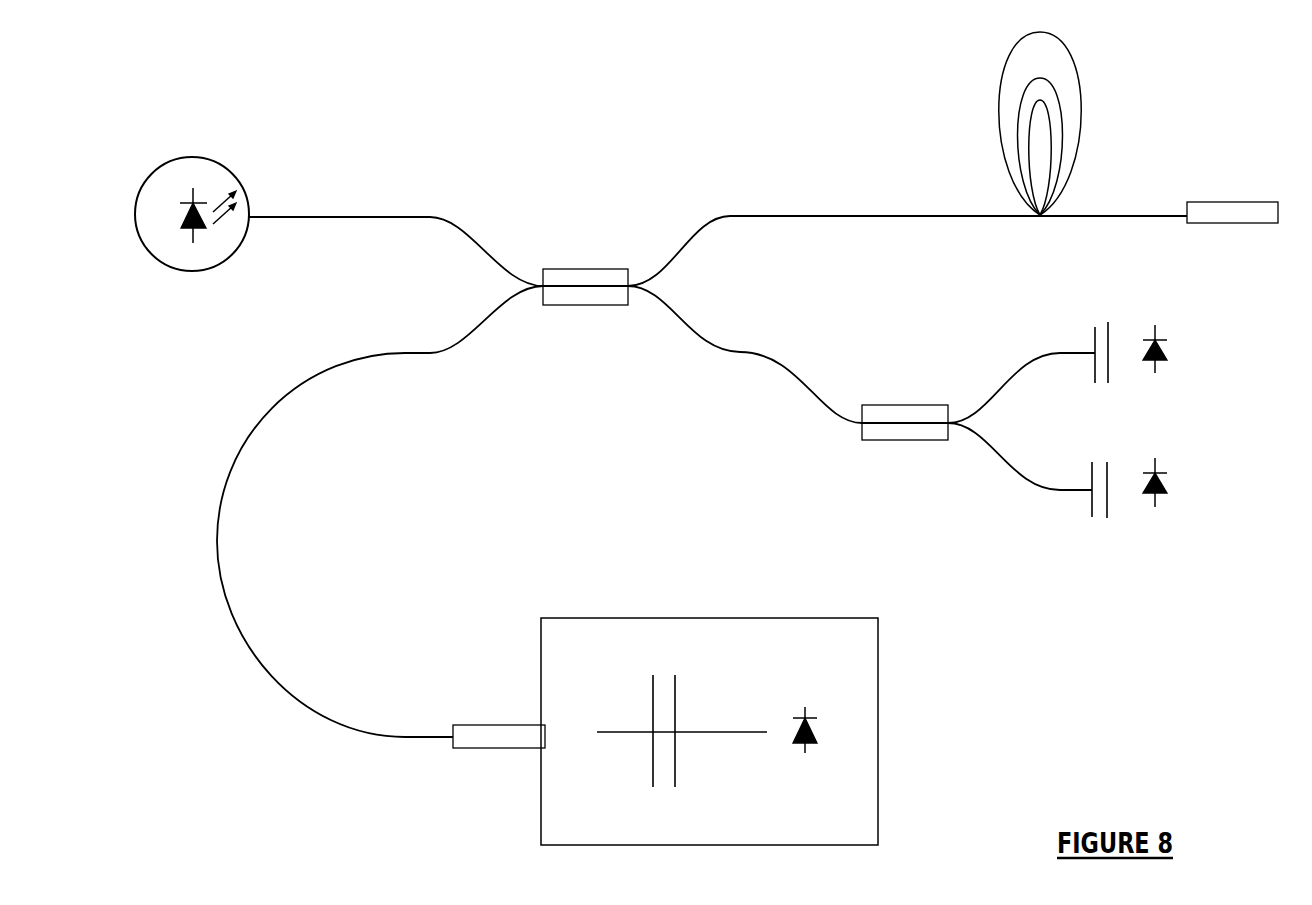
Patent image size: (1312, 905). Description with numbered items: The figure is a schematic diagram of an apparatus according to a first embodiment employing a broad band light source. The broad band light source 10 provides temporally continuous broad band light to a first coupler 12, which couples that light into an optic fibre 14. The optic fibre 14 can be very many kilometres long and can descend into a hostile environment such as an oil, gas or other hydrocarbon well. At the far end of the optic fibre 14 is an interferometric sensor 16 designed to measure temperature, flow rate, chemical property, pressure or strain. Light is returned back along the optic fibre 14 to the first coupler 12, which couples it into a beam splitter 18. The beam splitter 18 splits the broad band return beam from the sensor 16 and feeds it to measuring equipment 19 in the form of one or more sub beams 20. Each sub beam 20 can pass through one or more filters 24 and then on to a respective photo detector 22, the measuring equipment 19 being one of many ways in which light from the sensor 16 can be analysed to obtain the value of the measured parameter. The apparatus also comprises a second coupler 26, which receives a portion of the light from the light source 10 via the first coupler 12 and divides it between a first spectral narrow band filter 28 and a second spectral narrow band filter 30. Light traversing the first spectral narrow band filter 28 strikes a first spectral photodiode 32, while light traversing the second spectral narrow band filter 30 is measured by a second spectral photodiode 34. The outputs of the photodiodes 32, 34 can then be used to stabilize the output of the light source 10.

The broad band light source 10 is at (225, 170).
The first coupler 12 is at (560, 284).
The optic fibre 14 is at (998, 113).
The interferometric sensor 16 is at (1223, 223).
The beam splitter 18 is at (490, 718).
The measuring equipment 19 is at (710, 618).
The sub beam 20 is at (627, 732).
The photo detector 22 is at (798, 748).
The filter 24 is at (680, 713).
The second coupler 26 is at (912, 415).
The first spectral narrow band filter 28 is at (1108, 324).
The second spectral narrow band filter 30 is at (1107, 518).
The first spectral photodiode 32 is at (1167, 357).
The second spectral photodiode 34 is at (1167, 490).